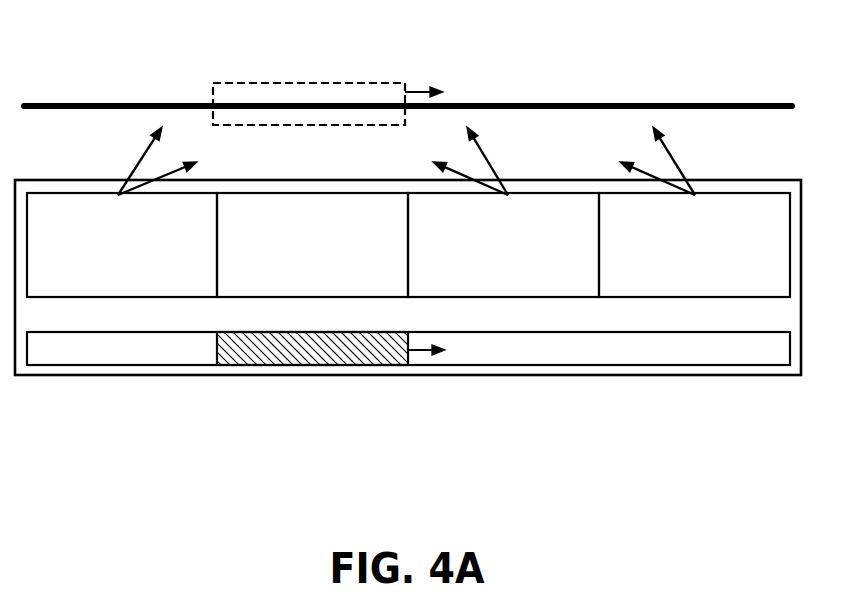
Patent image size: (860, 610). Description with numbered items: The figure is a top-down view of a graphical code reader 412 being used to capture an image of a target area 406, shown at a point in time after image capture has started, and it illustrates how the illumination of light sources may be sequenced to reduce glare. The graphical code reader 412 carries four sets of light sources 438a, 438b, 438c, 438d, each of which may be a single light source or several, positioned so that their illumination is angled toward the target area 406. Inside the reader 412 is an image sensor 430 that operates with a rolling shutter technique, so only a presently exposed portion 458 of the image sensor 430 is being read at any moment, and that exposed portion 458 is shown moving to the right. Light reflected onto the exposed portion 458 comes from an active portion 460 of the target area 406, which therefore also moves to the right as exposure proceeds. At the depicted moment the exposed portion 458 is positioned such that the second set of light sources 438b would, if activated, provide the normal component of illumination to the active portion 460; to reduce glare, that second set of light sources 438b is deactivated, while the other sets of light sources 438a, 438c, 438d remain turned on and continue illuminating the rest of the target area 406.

The target area 406 is at (595, 103).
The graphical code reader 412 is at (754, 389).
The image sensor 430 is at (602, 365).
The first set of light sources 438a is at (122, 212).
The second set of light sources 438b is at (312, 245).
The third set of light sources 438c is at (503, 212).
The fourth set of light sources 438d is at (694, 212).
The exposed portion 458 is at (317, 365).
The active portion 460 is at (367, 83).